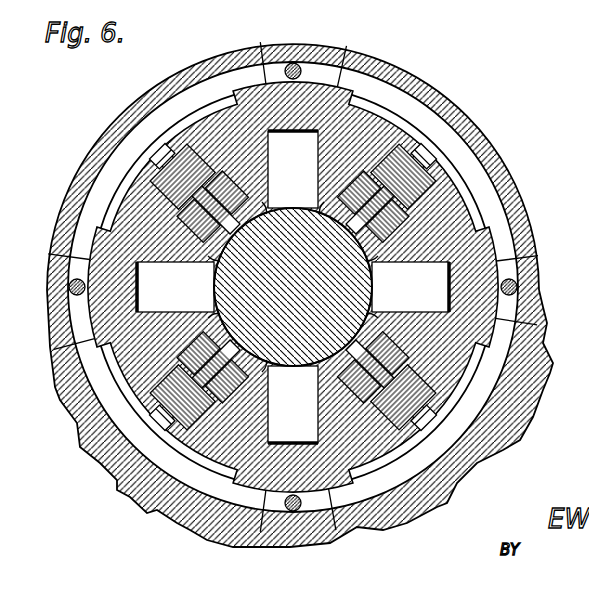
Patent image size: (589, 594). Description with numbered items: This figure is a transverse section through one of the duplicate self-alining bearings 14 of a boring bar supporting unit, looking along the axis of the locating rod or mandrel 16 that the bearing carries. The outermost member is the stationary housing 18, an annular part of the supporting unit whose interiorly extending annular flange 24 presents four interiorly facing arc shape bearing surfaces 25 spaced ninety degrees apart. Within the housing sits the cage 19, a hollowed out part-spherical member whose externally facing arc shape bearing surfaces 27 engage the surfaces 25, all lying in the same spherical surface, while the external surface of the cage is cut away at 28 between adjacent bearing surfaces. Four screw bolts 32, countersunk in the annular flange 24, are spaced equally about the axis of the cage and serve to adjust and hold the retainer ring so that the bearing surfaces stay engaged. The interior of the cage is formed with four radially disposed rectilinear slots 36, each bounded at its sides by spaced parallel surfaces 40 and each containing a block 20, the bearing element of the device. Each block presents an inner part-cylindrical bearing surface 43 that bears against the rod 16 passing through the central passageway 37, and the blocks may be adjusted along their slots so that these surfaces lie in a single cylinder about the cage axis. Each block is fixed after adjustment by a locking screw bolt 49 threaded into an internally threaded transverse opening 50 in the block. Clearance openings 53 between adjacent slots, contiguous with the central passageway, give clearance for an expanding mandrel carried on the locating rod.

The self-alining bearing 14 is at (530, 218).
The locating rod or mandrel 16 is at (271, 361).
The stationary housing 18 is at (490, 143).
The cage 19 is at (390, 130).
The block 20 is at (214, 308).
The interiorly extending annular flange 24 is at (487, 180).
The arc shape bearing surface 25 is at (343, 82).
The arc shape bearing surface 27 is at (261, 42).
The cut away portion 28 is at (444, 158).
The screw bolt 32 is at (298, 63).
The rectilinear slot 36 is at (347, 192).
The central passageway 37 is at (326, 374).
The parallel surface 40 is at (360, 180).
The part-cylindrical bearing surface 43 is at (262, 202).
The locking screw bolt 49 is at (422, 157).
The internally threaded transverse opening 50 is at (260, 193).
The clearance opening 53 is at (293, 287).